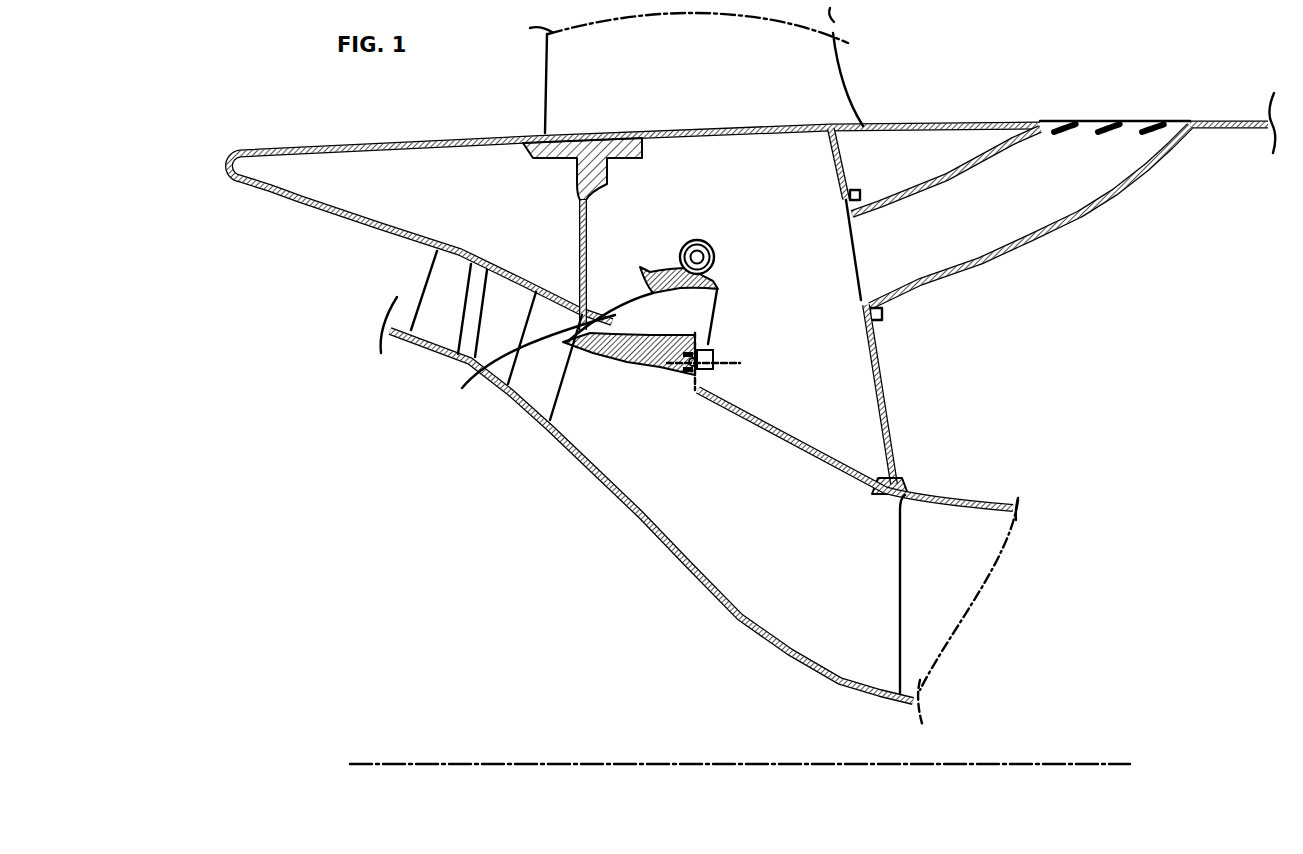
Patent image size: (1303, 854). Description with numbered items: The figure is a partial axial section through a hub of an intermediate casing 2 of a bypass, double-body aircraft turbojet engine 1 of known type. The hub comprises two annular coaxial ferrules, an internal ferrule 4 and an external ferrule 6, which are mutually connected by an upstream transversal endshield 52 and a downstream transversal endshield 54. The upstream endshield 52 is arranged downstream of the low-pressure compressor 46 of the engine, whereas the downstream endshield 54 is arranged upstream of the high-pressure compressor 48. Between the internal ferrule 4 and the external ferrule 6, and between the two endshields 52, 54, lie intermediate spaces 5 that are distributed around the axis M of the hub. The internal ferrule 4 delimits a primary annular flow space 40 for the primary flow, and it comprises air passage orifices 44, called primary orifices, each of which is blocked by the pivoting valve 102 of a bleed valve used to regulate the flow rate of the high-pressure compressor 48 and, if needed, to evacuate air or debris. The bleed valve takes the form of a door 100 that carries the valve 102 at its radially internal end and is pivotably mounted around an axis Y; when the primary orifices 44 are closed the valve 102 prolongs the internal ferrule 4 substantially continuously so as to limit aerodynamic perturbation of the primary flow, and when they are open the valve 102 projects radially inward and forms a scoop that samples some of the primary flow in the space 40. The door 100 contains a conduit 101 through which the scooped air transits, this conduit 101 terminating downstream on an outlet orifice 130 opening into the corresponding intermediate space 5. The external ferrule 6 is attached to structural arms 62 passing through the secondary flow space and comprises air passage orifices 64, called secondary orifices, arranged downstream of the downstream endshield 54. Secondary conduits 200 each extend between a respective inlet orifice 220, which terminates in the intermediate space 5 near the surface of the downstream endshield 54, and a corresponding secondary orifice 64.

The turbine engine 1 is at (482, 512).
The intermediate casing 2 is at (838, 62).
The internal ferrule 4 is at (796, 445).
The intermediate space 5 is at (824, 386).
The external ferrule 6 is at (690, 126).
The primary annular flow space 40 is at (724, 496).
The primary orifice 44 is at (529, 363).
The low-pressure compressor 46 is at (438, 293).
The high-pressure compressor 48 is at (953, 563).
The upstream transversal endshield 52 is at (578, 227).
The downstream transversal endshield 54 is at (888, 380).
The structural arm 62 is at (547, 90).
The secondary orifice 64 is at (1095, 120).
The door 100 is at (700, 238).
The conduit 101 is at (689, 322).
The pivoting valve 102 is at (630, 372).
The outlet orifice 130 is at (722, 322).
The secondary conduit 200 is at (1025, 257).
The inlet orifice 220 is at (850, 268).
The pivot axis Y is at (740, 363).
The hub axis M is at (1062, 762).